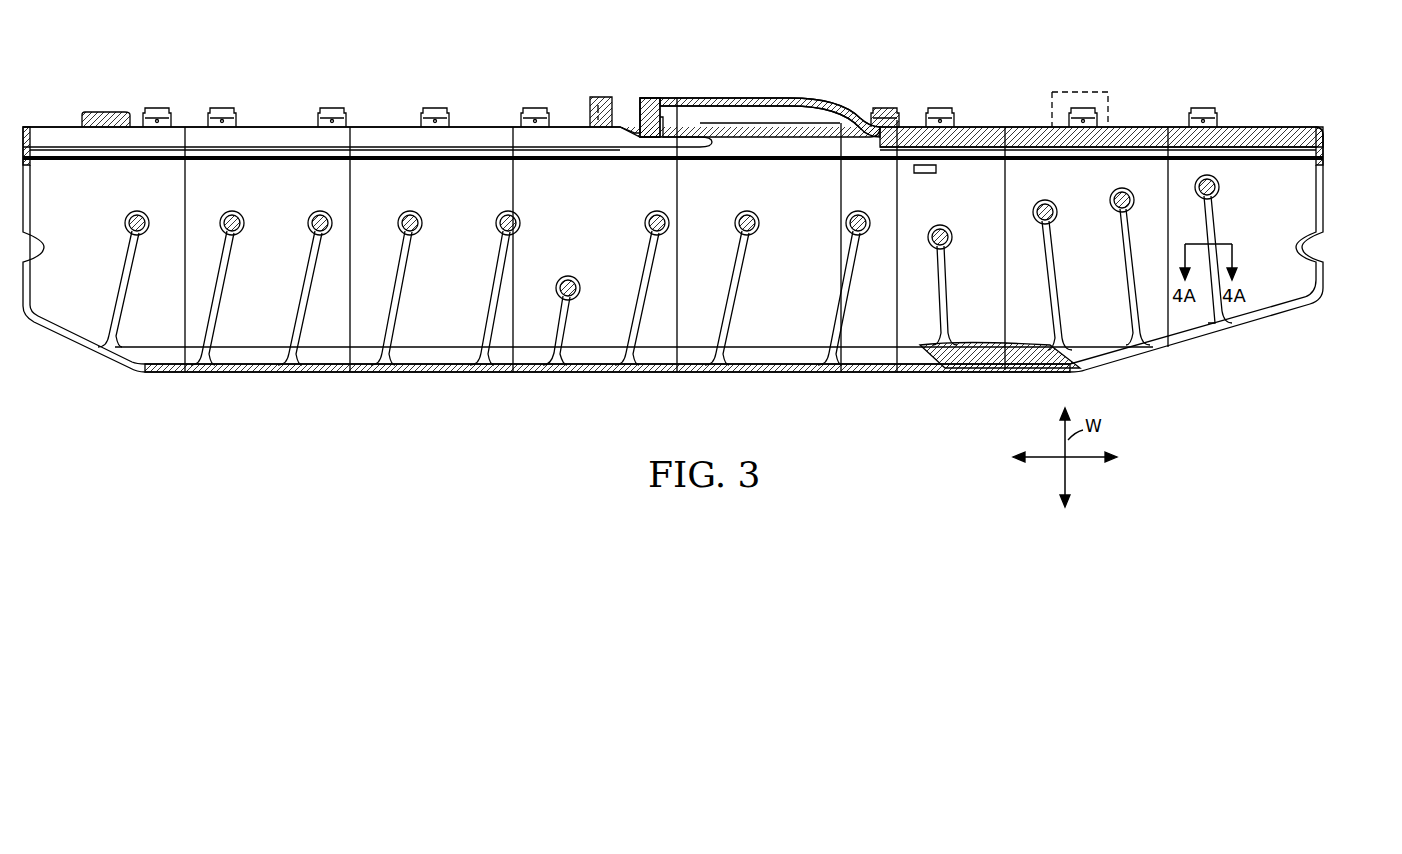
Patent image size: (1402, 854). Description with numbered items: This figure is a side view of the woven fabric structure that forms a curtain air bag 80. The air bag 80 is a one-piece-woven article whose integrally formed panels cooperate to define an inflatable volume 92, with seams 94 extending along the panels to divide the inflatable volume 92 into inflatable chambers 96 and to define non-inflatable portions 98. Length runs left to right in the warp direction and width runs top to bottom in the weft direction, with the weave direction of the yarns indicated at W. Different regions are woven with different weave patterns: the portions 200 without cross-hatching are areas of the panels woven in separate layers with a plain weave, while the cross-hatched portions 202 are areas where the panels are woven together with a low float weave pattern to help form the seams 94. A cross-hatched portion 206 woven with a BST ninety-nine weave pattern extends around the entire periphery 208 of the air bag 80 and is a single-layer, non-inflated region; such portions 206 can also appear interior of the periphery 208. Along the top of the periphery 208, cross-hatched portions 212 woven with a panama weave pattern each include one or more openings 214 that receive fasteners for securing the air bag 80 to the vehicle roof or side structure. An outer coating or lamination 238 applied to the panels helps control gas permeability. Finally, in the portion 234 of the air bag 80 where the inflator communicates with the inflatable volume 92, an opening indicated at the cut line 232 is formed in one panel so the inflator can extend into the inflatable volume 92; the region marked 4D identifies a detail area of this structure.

The air bag 80 is at (620, 100).
The inflatable volume 92 is at (1258, 185).
The seams 94 is at (405, 212).
The inflatable chambers 96 is at (65, 190).
The non-inflatable portions 98 is at (418, 212).
The plain woven portions 200 is at (806, 272).
The low float weave portions 202 is at (1316, 128).
The BST 99 weave portions 206 is at (578, 300).
The periphery 208 is at (470, 126).
The panama weave portions 212 is at (108, 112).
The openings 214 is at (898, 114).
The opening (cut line) 232 is at (655, 98).
The inflator portion 234 is at (700, 104).
The outer coating and/or lamination 238 is at (270, 192).
The section detail 4D is at (1080, 92).